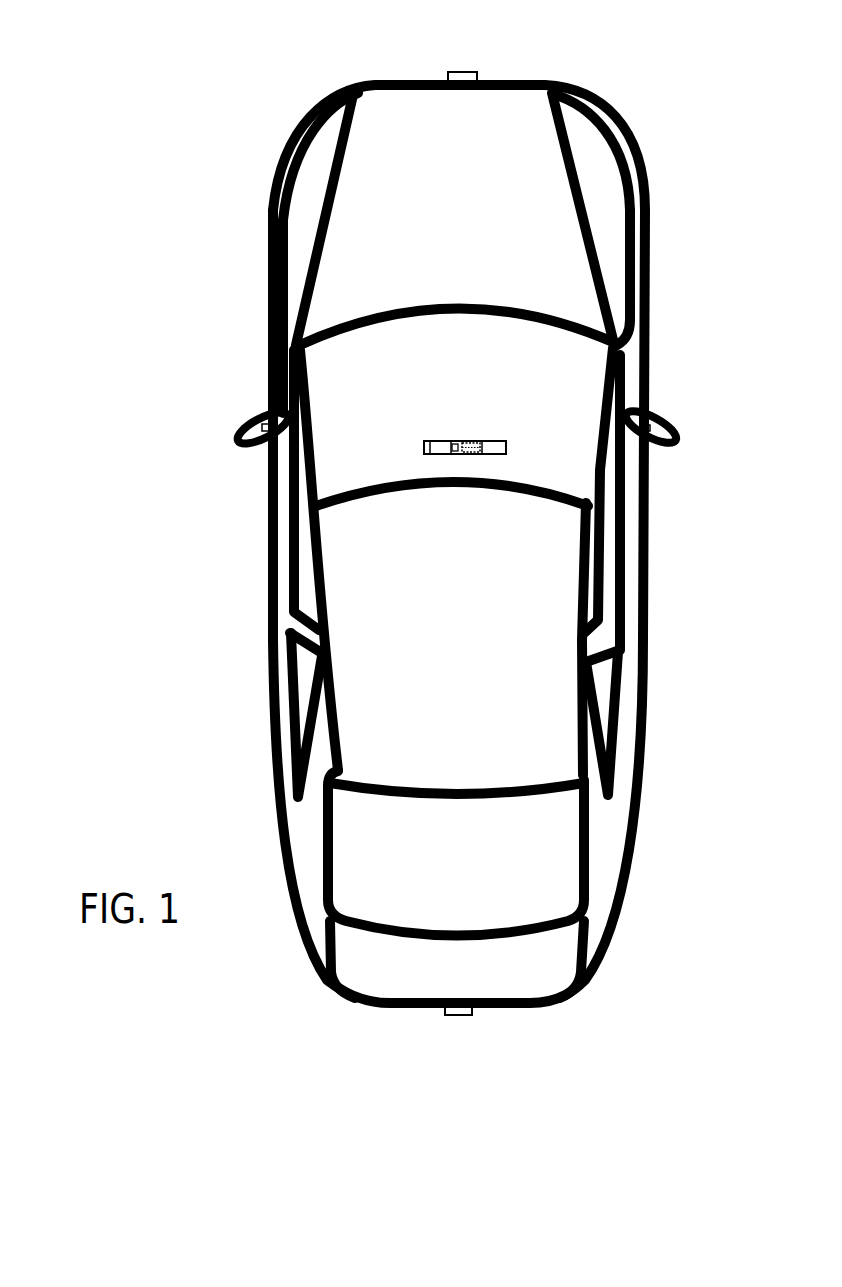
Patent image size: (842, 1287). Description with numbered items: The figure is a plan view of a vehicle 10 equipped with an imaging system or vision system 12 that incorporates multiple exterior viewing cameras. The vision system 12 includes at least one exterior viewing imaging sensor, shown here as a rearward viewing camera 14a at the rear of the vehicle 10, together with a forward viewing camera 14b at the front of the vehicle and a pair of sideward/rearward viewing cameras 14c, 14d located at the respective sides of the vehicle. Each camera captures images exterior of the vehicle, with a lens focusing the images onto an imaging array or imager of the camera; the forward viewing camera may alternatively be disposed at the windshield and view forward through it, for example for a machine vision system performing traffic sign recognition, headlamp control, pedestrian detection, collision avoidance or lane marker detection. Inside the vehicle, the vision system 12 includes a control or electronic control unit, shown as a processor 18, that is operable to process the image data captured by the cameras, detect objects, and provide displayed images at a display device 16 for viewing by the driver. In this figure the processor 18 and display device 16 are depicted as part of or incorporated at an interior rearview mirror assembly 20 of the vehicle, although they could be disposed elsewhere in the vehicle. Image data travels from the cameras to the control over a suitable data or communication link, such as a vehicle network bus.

The vehicle 10 is at (222, 170).
The vision system 12 is at (410, 1035).
The rearward viewing camera 14a is at (458, 1012).
The forward viewing camera 14b is at (465, 72).
The sideward/rearward viewing camera 14c is at (260, 423).
The sideward/rearward viewing camera 14d is at (645, 428).
The display device 16 is at (440, 445).
The processor 18 is at (462, 443).
The interior rearview mirror assembly 20 is at (507, 443).